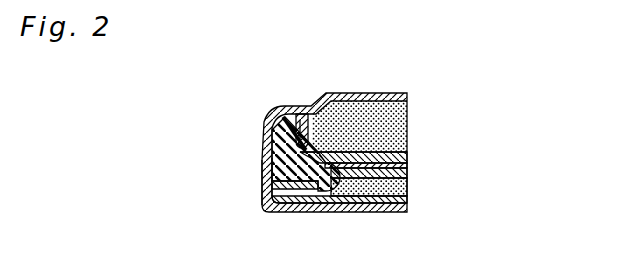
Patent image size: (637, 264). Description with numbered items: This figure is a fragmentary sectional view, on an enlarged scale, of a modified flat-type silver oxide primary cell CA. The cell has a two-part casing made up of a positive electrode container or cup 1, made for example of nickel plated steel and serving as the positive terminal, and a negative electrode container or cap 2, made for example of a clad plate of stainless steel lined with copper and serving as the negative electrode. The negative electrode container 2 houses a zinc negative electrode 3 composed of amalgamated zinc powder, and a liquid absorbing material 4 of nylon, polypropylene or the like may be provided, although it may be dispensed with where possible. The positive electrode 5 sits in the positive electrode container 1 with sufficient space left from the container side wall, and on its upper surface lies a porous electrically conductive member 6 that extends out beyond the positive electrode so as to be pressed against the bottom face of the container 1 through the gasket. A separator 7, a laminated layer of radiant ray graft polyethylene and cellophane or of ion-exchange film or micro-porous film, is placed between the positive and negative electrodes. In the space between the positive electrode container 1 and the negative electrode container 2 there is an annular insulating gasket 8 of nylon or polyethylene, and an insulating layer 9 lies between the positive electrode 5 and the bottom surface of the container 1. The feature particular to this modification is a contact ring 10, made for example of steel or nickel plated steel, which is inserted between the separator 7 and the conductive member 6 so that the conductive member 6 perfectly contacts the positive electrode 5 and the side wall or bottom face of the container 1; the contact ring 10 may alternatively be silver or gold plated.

The positive electrode container 1 is at (282, 106).
The negative electrode container 2 is at (405, 95).
The zinc negative electrode 3 is at (405, 127).
The liquid absorbing material 4 is at (405, 153).
The positive electrode 5 is at (405, 190).
The porous electrically conductive member 6 is at (405, 172).
The separator 7 is at (270, 170).
The annular insulating gasket 8 is at (282, 140).
The insulating layer 9 is at (270, 202).
The contact ring 10 is at (270, 188).
The modified cell CA is at (503, 82).